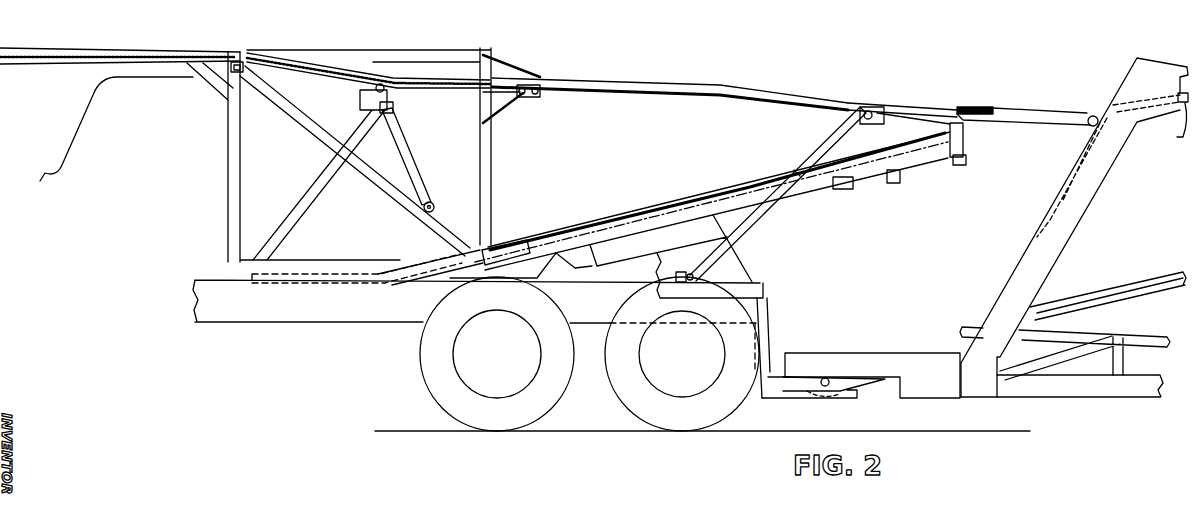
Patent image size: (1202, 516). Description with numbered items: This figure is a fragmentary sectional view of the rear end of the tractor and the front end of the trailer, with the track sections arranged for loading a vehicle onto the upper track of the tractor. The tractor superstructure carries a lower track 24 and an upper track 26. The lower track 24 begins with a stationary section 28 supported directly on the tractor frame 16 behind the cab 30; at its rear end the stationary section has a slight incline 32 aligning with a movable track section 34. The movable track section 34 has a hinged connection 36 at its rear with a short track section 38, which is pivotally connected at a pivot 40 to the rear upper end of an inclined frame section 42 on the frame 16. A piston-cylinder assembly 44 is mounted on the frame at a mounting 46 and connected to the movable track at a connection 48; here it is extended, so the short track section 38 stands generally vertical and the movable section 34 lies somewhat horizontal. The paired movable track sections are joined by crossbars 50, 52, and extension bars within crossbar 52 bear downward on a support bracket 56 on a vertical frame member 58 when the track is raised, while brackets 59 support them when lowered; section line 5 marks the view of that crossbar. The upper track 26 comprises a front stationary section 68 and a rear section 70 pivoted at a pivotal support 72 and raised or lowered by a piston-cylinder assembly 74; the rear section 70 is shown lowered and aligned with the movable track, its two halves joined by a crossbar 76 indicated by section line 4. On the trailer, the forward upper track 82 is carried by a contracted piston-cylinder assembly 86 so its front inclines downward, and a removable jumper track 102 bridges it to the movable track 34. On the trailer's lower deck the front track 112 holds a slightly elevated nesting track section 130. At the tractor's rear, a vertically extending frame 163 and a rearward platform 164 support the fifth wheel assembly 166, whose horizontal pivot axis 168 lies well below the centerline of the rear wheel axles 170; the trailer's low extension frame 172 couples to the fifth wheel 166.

The section line 4- 4 is at (412, 72).
The section line 5- 5 is at (511, 24).
The tractor frame 16 is at (320, 318).
The lower track 24 is at (575, 72).
The upper track 26 is at (208, 54).
The stationary section 28 is at (310, 273).
The cab 30 is at (100, 121).
The incline 32 is at (413, 267).
The movable track section 34 is at (690, 87).
The hinged connection 36 is at (953, 164).
The short track section 38 is at (966, 140).
The pivotal connection 40 is at (950, 161).
The inclined frame section 42 is at (864, 190).
The piston-cylinder assembly 44 is at (767, 200).
The mounting 46 is at (693, 277).
The connection 48 is at (865, 104).
The crossbar 50 is at (840, 165).
The crossbar 52 is at (528, 96).
The support bracket 56 is at (503, 110).
The vertical frame member 58 is at (487, 184).
The bracket 59 is at (528, 233).
The front stationary section 68 is at (91, 57).
The rear section 70 is at (337, 70).
The pivotal support 72 is at (247, 73).
The piston-cylinder assembly 74 is at (413, 157).
The crossbar 76 is at (357, 88).
The forward upper track 82 is at (1074, 227).
The piston-cylinder assembly 86 is at (1080, 177).
The jumper track 102 is at (1043, 110).
The front track 112 is at (1073, 340).
The nesting track section 130 is at (1118, 288).
The vertically extending frame 163 is at (767, 335).
The platform 164 is at (847, 407).
The fifth wheel assembly 166 is at (793, 385).
The horizontal pivot axis 168 is at (833, 382).
The rear wheel axles 170 is at (498, 358).
The low extension frame 172 is at (897, 362).